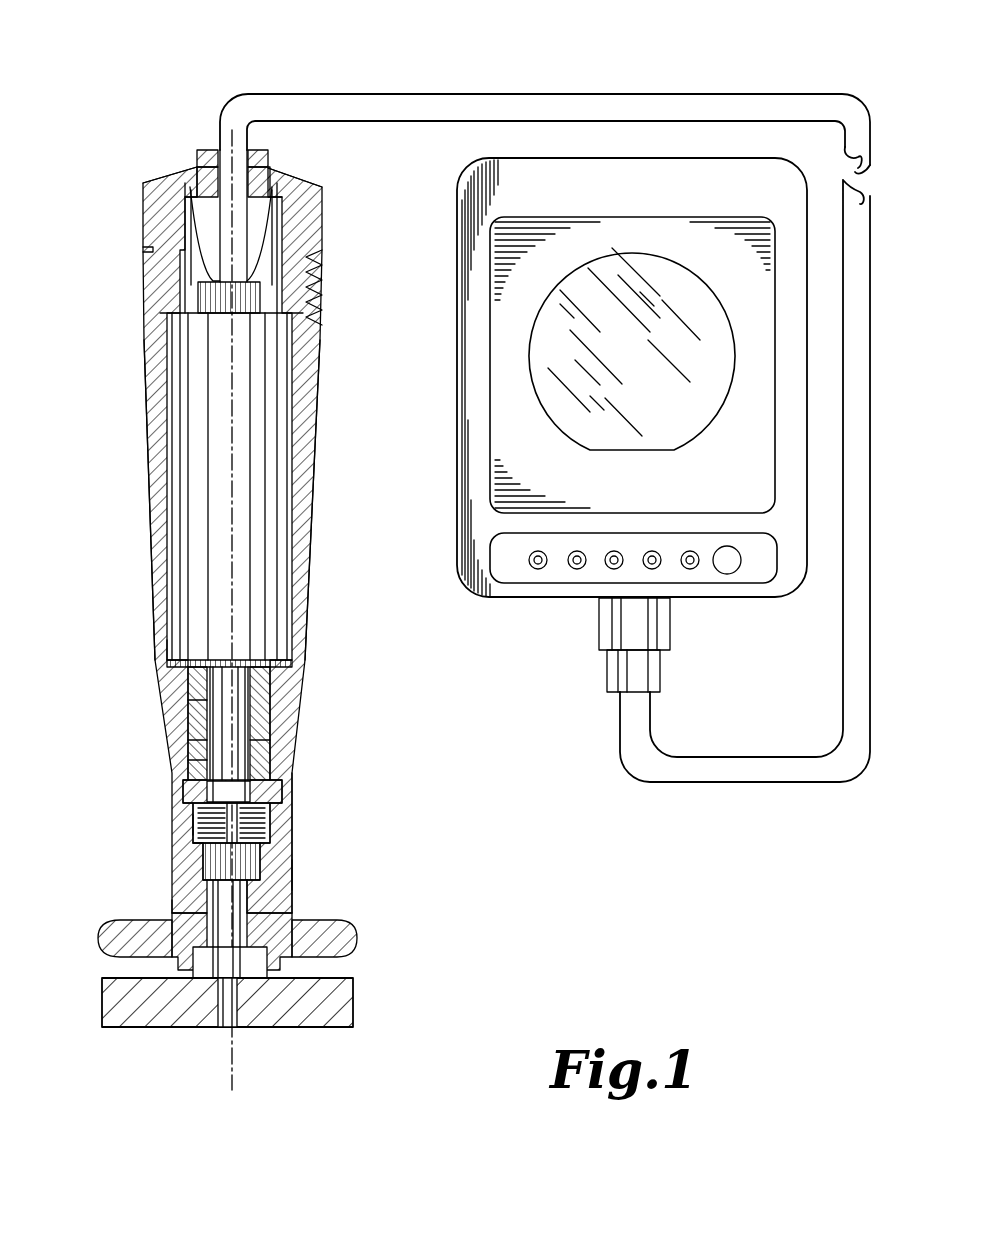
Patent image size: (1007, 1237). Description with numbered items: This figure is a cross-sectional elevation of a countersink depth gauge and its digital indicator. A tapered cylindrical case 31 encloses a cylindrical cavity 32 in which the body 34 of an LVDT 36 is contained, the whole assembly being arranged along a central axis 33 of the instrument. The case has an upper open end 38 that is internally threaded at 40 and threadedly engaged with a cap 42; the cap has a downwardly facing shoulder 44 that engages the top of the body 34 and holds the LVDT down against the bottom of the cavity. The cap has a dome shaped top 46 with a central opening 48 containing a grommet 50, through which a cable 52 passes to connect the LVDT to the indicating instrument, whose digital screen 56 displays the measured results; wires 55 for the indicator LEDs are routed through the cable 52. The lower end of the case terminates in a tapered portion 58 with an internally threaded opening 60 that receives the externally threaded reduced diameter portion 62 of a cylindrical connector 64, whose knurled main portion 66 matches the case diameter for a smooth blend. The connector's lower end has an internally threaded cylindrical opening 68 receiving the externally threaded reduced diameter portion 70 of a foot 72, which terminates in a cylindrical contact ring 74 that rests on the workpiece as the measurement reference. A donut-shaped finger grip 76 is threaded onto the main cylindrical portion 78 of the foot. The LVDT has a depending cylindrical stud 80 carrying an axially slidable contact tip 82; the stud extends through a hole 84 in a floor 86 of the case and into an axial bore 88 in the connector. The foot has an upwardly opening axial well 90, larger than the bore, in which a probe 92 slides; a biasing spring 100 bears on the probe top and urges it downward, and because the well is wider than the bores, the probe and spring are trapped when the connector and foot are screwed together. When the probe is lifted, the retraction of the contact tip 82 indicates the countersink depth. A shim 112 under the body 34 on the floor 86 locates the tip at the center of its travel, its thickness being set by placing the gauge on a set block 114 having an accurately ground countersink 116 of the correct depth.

The tapered cylindrical case 31 is at (344, 438).
The cylindrical cavity 32 is at (288, 497).
The central passage 33 is at (233, 372).
The body of the LVDT 34 is at (187, 437).
The LVDT 36 is at (158, 492).
The upper open end 38 is at (320, 262).
The internal threads 40 is at (322, 224).
The cap 42 is at (157, 160).
The downwardly facing shoulder 44 is at (190, 320).
The dome shaped top 46 is at (300, 174).
The central opening 48 is at (263, 150).
The grommet 50 is at (207, 150).
The cable 52 is at (358, 96).
The wires 55 is at (187, 247).
The digital screen 56 is at (651, 372).
The tapered portion 58 is at (187, 753).
The internally threaded opening 60 is at (260, 753).
The reduced diameter portion 62 is at (200, 762).
The cylindrical connector 64 is at (306, 782).
The main portion 66 is at (215, 847).
The internally threaded cylindrical opening 68 is at (273, 840).
The reduced diameter portion of the foot 70 is at (240, 875).
The foot 72 is at (306, 873).
The cylindrical contact ring 74 is at (273, 972).
The donut-shaped finger grip 76 is at (117, 938).
The main cylindrical portion of the foot 78 is at (170, 916).
The depending cylindrical stud 80 is at (240, 718).
The contact tip 82 is at (227, 822).
The hole 84 is at (215, 673).
The floor 86 is at (300, 673).
The axial bore 88 is at (213, 727).
The axial well 90 is at (175, 912).
The probe 92 is at (268, 895).
The biasing spring 100 is at (288, 803).
The shim 112 is at (188, 650).
The set block 114 is at (352, 996).
The countersink 116 is at (213, 980).